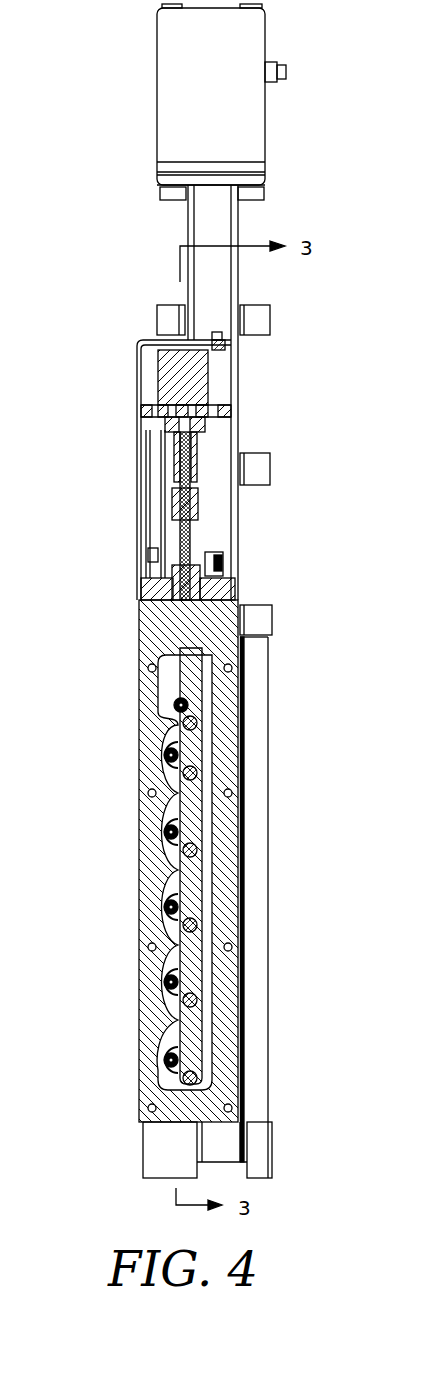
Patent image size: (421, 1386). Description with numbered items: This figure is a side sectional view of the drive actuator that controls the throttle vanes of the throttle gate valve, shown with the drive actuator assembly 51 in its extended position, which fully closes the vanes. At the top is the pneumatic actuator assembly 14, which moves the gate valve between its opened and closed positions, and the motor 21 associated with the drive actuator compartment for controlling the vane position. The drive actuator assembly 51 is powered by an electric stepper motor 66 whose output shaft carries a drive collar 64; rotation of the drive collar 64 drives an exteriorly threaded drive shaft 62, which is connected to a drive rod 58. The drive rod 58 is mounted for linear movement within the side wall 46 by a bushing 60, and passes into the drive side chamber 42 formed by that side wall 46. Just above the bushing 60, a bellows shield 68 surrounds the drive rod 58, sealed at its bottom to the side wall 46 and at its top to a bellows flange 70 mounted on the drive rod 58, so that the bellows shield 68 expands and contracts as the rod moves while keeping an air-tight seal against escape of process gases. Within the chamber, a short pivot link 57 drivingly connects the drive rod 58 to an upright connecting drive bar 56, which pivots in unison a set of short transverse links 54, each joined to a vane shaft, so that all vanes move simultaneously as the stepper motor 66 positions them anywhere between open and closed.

The pneumatic actuator assembly 14 is at (174, 134).
The motor 21 is at (128, 384).
The drive actuator assembly 51 is at (86, 466).
The electric stepper motor 66 is at (215, 390).
The drive collar 64 is at (140, 505).
The drive shaft 62 is at (218, 530).
The bellows flange 70 is at (150, 555).
The bellows shield 68 is at (140, 600).
The bushing 60 is at (199, 861).
The drive rod 58 is at (244, 656).
The pivot link 57 is at (236, 720).
The connecting drive bar 56 is at (162, 818).
The transverse link 54 is at (148, 866).
The drive side chamber 42 is at (243, 872).
The side wall 46 is at (141, 1108).